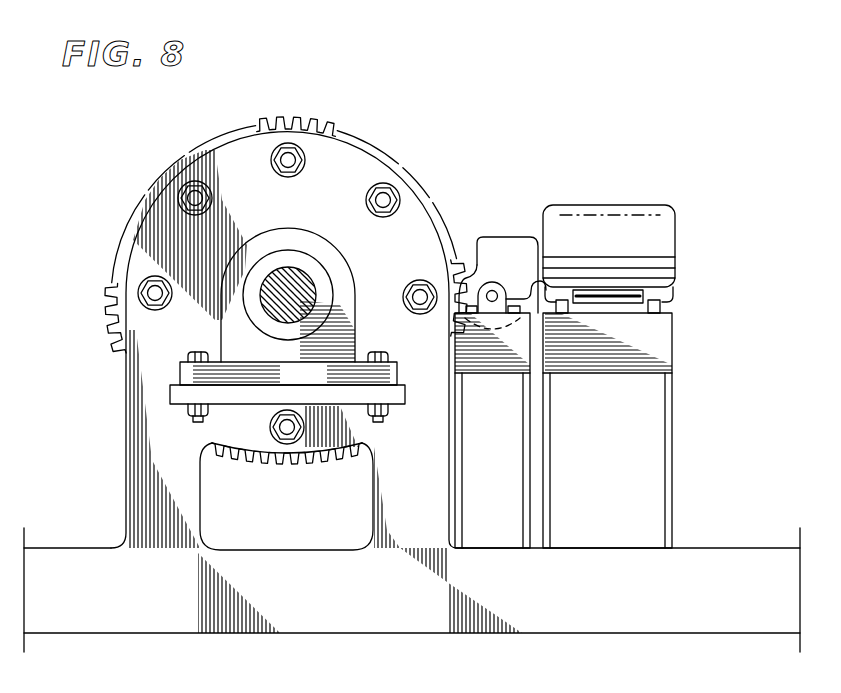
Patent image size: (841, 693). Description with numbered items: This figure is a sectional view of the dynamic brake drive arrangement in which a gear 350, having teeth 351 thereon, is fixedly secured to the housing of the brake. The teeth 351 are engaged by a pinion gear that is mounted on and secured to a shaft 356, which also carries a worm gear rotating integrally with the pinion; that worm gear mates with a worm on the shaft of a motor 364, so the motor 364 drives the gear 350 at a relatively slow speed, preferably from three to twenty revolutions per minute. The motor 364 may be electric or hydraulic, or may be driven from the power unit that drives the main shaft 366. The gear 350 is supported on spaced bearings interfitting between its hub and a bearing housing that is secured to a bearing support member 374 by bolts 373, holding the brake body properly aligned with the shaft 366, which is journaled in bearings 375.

The gear 350 is at (362, 122).
The teeth 351 is at (303, 118).
The shaft 356 is at (492, 290).
The motor 364 is at (597, 215).
The shaft 366 is at (291, 270).
The bolts 373 is at (384, 199).
The bearing support member 374 is at (140, 360).
The bearings 375 is at (337, 268).